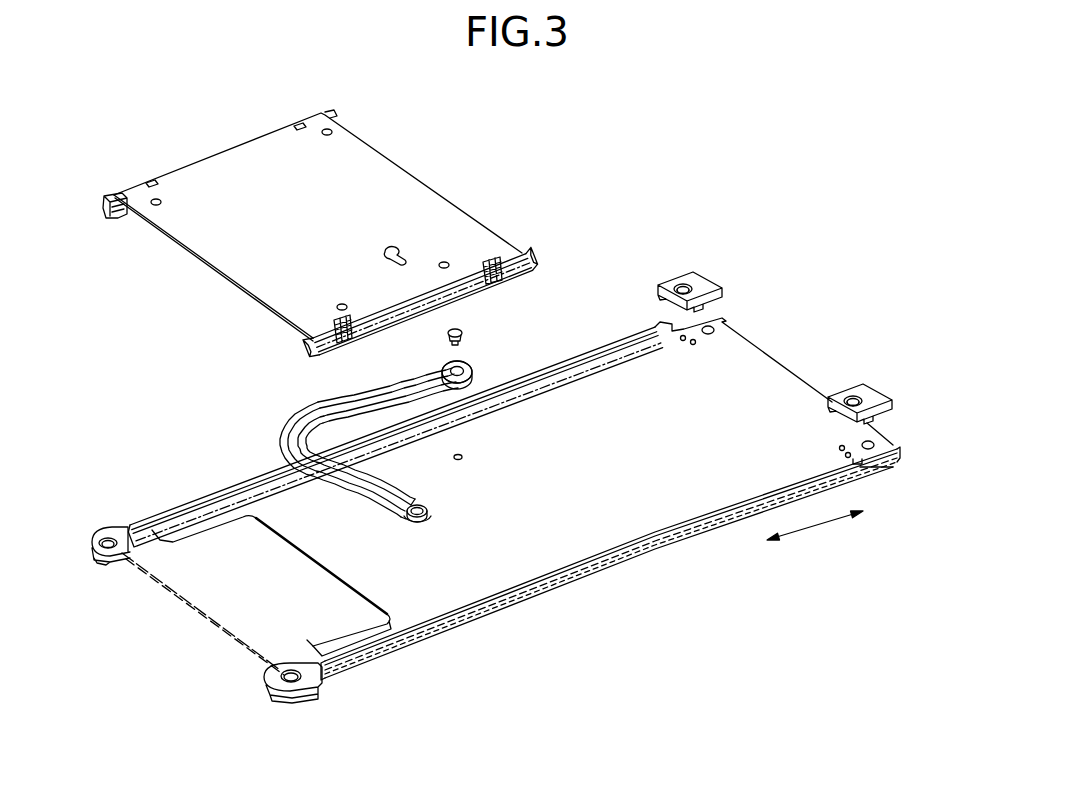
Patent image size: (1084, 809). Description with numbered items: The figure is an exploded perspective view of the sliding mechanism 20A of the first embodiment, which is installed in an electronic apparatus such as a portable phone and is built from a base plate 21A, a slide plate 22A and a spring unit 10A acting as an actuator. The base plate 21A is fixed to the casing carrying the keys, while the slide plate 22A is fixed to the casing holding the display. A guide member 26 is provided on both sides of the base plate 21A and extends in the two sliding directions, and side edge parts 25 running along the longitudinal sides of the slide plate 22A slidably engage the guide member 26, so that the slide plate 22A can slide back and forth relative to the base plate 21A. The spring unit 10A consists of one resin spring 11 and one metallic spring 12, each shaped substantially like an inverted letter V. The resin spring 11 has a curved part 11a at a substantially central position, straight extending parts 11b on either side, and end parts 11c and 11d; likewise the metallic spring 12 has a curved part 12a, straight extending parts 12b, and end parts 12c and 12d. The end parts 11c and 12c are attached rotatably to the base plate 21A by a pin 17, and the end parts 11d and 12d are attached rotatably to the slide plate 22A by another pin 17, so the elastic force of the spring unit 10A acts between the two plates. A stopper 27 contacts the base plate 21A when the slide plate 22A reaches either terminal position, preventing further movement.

The sliding mechanism 20A is at (634, 107).
The base plate 21A is at (376, 178).
The slide plate 22A is at (758, 368).
The spring unit 10A is at (291, 408).
The resin spring 11 is at (380, 414).
The curved part 11a is at (322, 434).
The extending part 11b is at (416, 388).
The end part 11c is at (412, 518).
The end part 11d is at (467, 365).
The metallic spring 12 is at (274, 446).
The curved part 12a is at (288, 436).
The extending part 12b is at (357, 392).
The end part 12c is at (437, 515).
The end part 12d is at (457, 375).
The pin 17 is at (457, 327).
The side edge part 25 is at (180, 510).
The guide member 26 is at (113, 195).
The stopper 27 is at (697, 282).